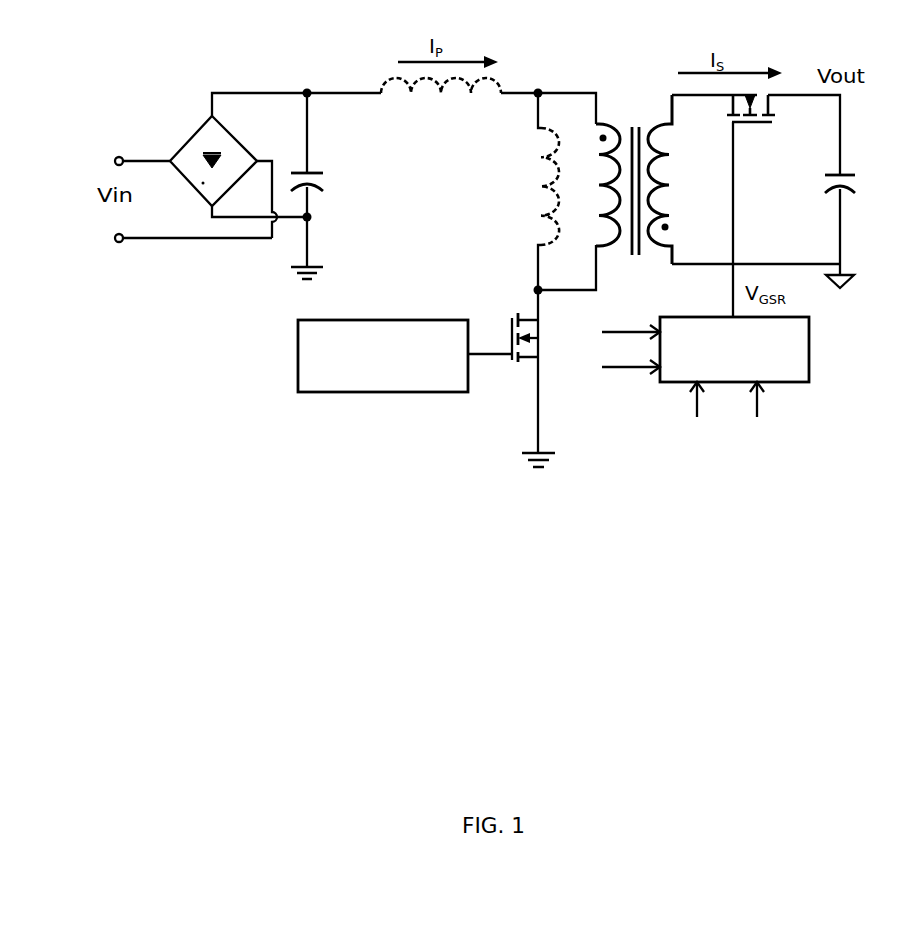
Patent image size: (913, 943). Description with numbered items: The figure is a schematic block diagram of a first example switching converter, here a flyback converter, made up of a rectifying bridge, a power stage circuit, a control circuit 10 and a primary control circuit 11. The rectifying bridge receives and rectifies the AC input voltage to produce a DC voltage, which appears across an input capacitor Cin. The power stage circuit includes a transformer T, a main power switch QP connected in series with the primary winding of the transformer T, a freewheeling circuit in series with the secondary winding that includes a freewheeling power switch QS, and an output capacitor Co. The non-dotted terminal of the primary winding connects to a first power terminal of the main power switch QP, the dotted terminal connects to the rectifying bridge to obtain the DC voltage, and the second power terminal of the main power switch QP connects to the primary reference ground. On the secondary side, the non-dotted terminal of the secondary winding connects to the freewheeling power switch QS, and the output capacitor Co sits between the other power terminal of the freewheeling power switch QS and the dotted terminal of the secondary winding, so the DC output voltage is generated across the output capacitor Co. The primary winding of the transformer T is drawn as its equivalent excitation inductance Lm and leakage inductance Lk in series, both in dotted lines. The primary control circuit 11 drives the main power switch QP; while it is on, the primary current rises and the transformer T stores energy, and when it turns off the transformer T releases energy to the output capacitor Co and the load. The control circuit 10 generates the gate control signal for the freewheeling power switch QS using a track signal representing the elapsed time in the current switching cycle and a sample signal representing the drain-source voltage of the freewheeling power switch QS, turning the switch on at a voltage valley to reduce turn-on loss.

The control circuit 10 is at (747, 376).
The primary control circuit 11 is at (431, 384).
The input capacitor Cin is at (329, 184).
The output capacitor Co is at (860, 230).
The leakage inductance Lk is at (441, 99).
The excitation inductance Lm is at (524, 191).
The transformer T is at (634, 178).
The main power switch QP is at (509, 327).
The freewheeling power switch QS is at (751, 127).